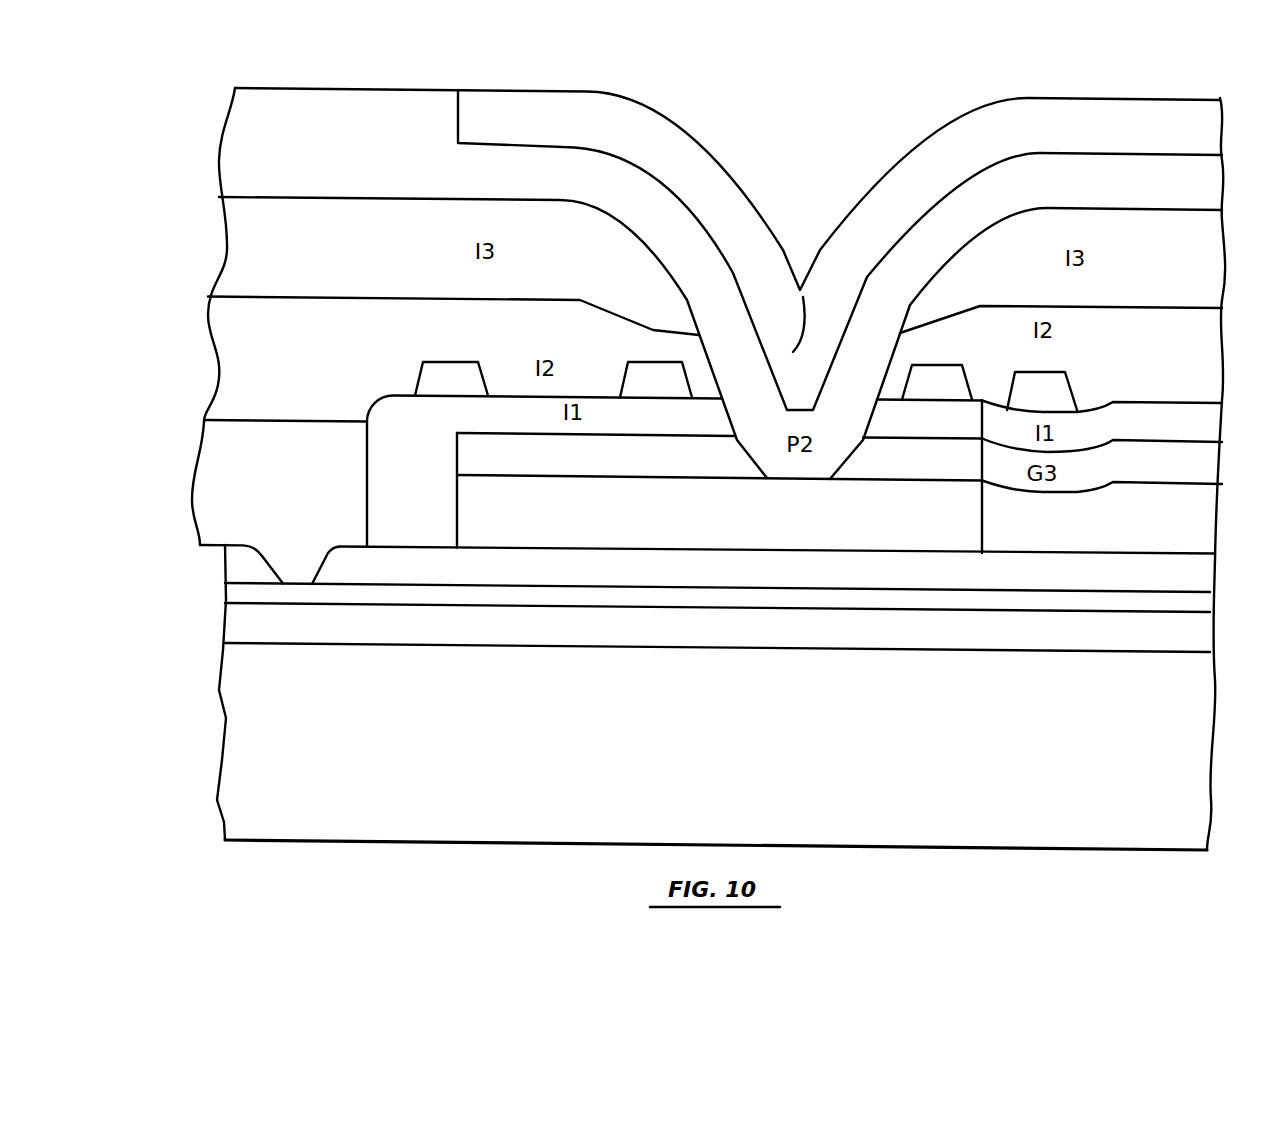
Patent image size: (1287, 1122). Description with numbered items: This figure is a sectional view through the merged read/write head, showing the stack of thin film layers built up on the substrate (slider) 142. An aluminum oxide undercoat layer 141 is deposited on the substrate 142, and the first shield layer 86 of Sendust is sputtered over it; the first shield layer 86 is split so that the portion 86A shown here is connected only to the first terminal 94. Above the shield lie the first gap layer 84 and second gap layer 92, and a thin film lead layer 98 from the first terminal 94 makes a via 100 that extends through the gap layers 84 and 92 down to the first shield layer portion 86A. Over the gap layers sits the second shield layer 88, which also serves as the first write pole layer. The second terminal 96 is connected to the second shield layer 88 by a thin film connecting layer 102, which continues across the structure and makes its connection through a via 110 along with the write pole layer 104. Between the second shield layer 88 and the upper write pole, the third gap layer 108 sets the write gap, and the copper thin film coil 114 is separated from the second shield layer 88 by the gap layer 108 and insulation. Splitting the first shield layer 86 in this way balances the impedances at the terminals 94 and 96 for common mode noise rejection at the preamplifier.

The thin film connecting layer 102 is at (572, 113).
The write pole layer 104 is at (617, 180).
The via 110 is at (803, 293).
The thin film coil 114 is at (648, 362).
The third gap layer 108 is at (637, 450).
The second shield layer 88 is at (882, 532).
The thin film lead layer 98 is at (250, 487).
The via 100 is at (300, 565).
The first gap layer 84 is at (767, 616).
The second gap layer 92 is at (580, 568).
The first shield layer portion 86A is at (615, 595).
The first shield layer 86 is at (1160, 607).
The undercoat layer 141 is at (1152, 640).
The substrate (slider) 142 is at (1155, 740).
The first terminal 94 is at (197, 453).
The second terminal 96 is at (458, 117).